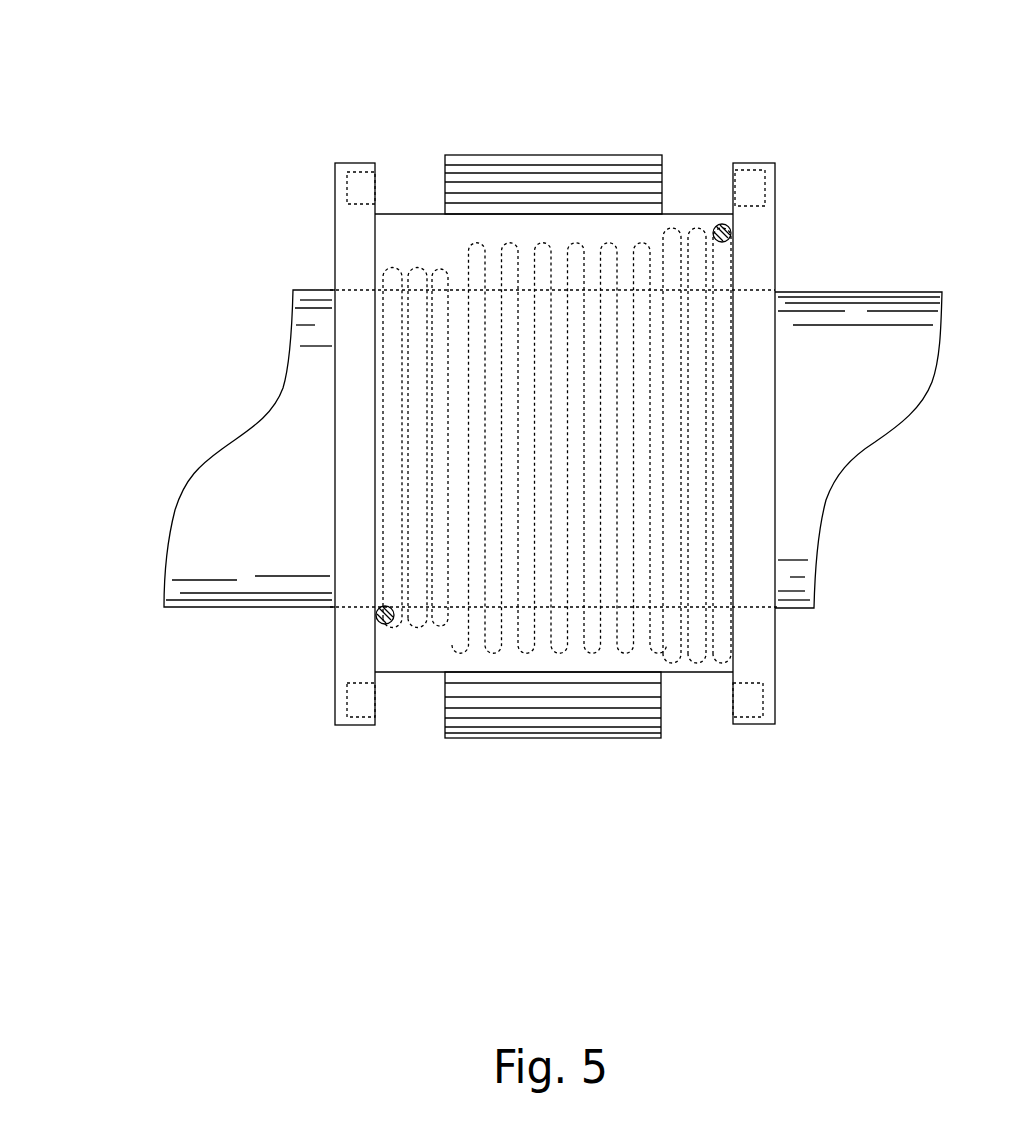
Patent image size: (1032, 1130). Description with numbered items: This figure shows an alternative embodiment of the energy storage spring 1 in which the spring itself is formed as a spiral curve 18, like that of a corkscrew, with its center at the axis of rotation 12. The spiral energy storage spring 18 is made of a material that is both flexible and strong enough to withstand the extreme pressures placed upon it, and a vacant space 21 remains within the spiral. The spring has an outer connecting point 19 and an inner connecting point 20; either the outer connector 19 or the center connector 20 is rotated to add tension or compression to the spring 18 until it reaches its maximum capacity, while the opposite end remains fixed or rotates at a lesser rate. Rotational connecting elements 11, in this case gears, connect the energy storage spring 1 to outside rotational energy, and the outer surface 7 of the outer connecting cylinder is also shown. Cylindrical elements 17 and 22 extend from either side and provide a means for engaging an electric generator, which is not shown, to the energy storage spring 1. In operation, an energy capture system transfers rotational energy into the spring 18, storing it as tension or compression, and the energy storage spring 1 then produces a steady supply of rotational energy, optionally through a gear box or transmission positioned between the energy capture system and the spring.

The energy storage spring 1 is at (290, 160).
The outer surface of outer connecting element/cylinder 7 is at (368, 444).
The rotational connecting element 11 is at (598, 180).
The axis of rotation 12 is at (82, 512).
The cylindrical element 17 is at (866, 386).
The energy storage spring in the form of a spiral curve 18 is at (537, 445).
The outer connecting point of spiral energy storage spring 19 is at (722, 224).
The inner connecting point of spiral energy storage spring 20 is at (386, 626).
The vacant space in spiral energy storage spring 21 is at (432, 278).
The cylindrical element 22 is at (285, 548).